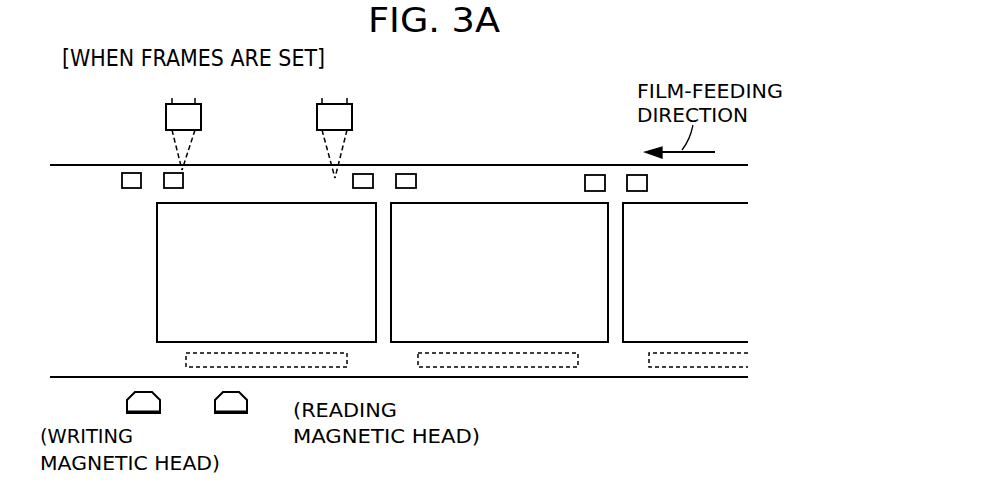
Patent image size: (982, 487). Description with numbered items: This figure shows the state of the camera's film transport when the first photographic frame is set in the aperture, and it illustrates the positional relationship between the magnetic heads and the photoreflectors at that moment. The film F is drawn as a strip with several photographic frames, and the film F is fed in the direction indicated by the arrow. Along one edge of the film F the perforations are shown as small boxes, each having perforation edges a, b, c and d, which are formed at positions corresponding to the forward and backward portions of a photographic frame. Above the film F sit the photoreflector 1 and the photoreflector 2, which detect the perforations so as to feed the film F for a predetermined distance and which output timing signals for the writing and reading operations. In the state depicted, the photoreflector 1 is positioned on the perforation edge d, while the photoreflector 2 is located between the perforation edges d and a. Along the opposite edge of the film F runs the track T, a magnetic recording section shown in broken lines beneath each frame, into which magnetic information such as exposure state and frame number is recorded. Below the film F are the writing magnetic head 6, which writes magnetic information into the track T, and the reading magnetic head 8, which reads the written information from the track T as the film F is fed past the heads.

The photoreflector 1 is at (166, 113).
The photoreflector 2 is at (353, 117).
The writing magnetic head 6 is at (127, 402).
The reading magnetic head 8 is at (247, 405).
The film F is at (500, 165).
The track T is at (550, 368).
The perforation edge a is at (122, 177).
The perforation edge b is at (148, 188).
The perforation edge c is at (162, 180).
The perforation edge d is at (183, 185).